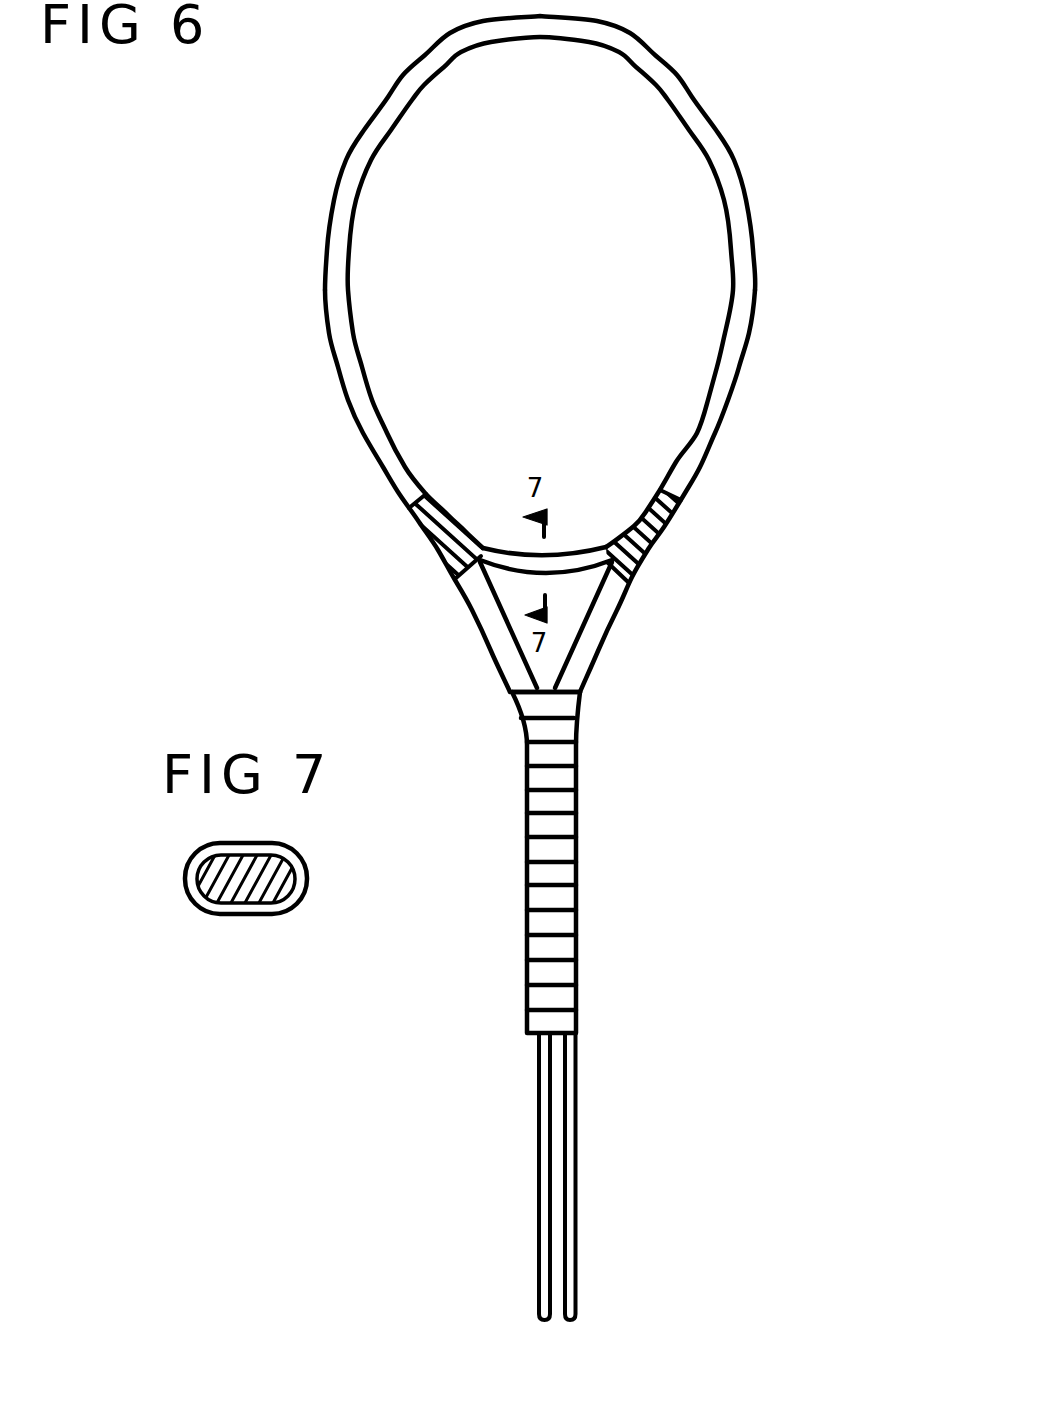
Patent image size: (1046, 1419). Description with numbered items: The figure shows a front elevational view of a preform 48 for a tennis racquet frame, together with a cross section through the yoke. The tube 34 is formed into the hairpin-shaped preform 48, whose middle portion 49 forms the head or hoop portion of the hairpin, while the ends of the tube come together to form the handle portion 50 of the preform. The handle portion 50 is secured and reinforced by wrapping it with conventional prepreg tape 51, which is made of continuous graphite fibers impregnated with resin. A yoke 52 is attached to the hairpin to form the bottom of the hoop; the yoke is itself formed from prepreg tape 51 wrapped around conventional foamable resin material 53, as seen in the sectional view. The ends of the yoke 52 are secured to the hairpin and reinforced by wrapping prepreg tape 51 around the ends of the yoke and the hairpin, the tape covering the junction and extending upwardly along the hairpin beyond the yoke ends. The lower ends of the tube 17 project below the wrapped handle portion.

In FIG. 6, the handle tangs 17 is at (540, 1191).
In FIG. 6, the tube 34 is at (752, 258).
In FIG. 6, the preform 48 is at (337, 365).
In FIG. 6, the middle portion 49 is at (642, 40).
In FIG. 6, the handle portion 50 is at (507, 688).
In FIG. 6, the prepreg tape 51 is at (433, 533).
In FIG. 7, the prepreg tape 51 is at (222, 913).
In FIG. 6, the yoke 52 is at (512, 552).
In FIG. 7, the yoke 52 is at (292, 848).
In FIG. 7, the foamable resin material 53 is at (257, 883).